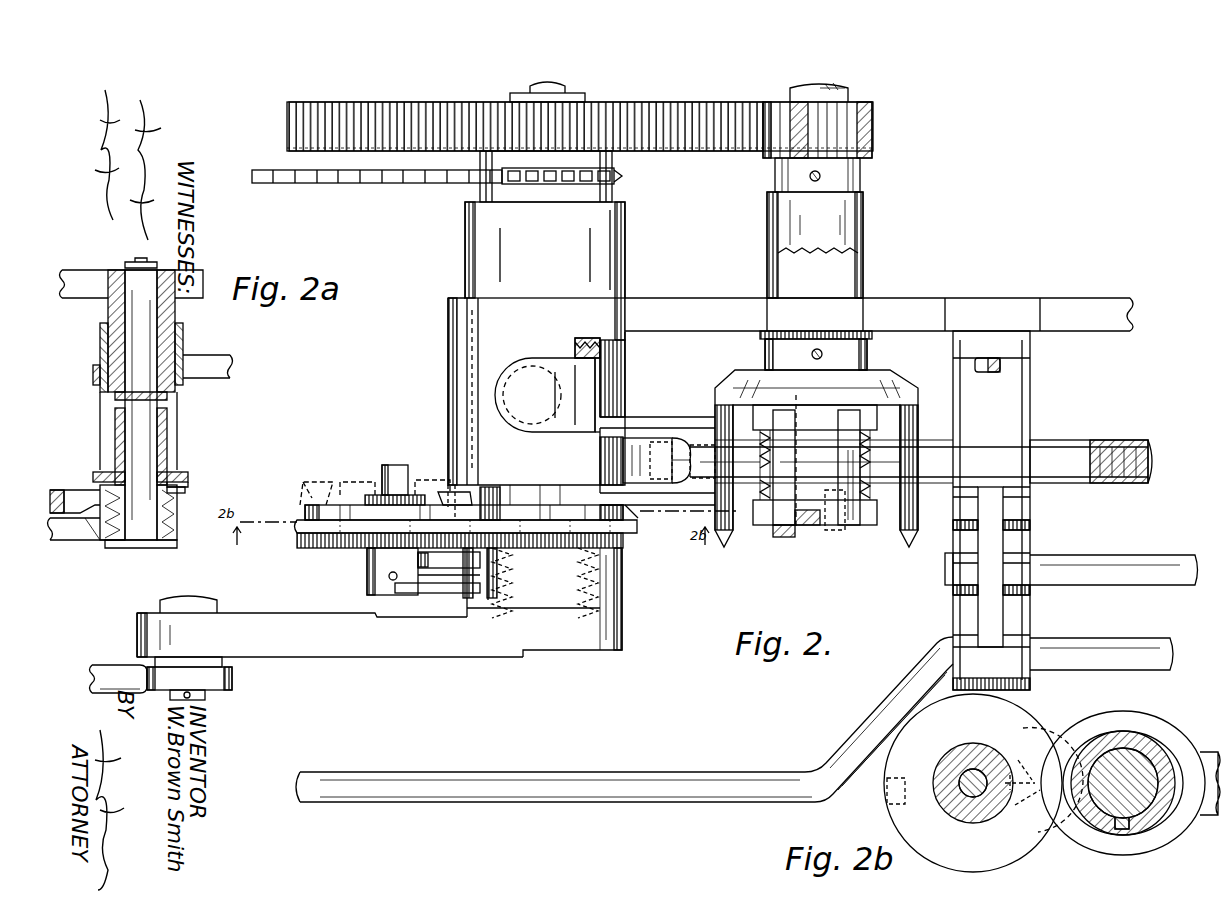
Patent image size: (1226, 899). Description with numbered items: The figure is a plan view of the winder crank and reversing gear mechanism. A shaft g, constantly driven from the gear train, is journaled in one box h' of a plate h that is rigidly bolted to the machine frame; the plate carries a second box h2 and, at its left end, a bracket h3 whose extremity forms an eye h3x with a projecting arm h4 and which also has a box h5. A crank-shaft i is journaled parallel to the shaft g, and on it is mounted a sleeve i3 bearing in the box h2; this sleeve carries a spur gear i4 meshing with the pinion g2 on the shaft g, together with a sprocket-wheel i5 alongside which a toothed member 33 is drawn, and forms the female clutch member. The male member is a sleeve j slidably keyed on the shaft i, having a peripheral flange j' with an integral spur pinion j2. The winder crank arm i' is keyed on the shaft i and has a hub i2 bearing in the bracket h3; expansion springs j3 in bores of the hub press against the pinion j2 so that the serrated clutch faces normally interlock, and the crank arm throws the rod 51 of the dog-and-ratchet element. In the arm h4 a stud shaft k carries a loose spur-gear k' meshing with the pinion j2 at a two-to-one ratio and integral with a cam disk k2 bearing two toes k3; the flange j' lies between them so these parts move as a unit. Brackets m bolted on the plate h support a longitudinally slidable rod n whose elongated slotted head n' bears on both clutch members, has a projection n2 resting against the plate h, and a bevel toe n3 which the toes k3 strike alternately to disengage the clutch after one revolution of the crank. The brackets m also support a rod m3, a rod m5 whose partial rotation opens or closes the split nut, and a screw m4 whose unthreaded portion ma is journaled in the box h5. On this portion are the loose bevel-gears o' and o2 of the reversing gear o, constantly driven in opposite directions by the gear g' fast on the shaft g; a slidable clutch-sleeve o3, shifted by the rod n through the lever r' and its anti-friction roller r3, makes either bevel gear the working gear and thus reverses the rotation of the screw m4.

In FIG. 2, the spur gear i4 is at (300, 117).
In FIG. 2A, the spur gear i4 is at (80, 293).
In FIG. 2, the rack 33 is at (328, 184).
In FIG. 2, the sprocket-wheel i5 is at (480, 178).
In FIG. 2A, the sprocket-wheel i5 is at (176, 306).
In FIG. 2, the sleeve i3 is at (614, 190).
In FIG. 2A, the sleeve i3 is at (115, 346).
In FIG. 2, the box h2 is at (618, 246).
In FIG. 2A, the box h2 is at (184, 338).
In FIG. 2, the projection n2 is at (525, 334).
In FIG. 2, the shaft g is at (854, 98).
In FIG. 2, the pinion g2 is at (874, 143).
In FIG. 2, the box h' is at (833, 244).
In FIG. 2, the plate h is at (879, 301).
In FIG. 2A, the plate h is at (161, 373).
In FIG. 2, the sleeve (male clutch member) j is at (538, 445).
In FIG. 2A, the sleeve (male clutch member) j is at (150, 445).
In FIG. 2B, the sleeve (male clutch member) j is at (1123, 761).
In FIG. 2, the crank-shaft i is at (614, 354).
In FIG. 2A, the crank-shaft i is at (137, 429).
In FIG. 2B, the crank-shaft i is at (1111, 753).
In FIG. 2, the bracket h3 is at (608, 378).
In FIG. 2A, the bracket h3 is at (104, 424).
In FIG. 2, the slotted head n' is at (584, 431).
In FIG. 2B, the slotted head n' is at (1130, 774).
In FIG. 2, the box h5 is at (658, 432).
In FIG. 2, the bevel toe n3 is at (476, 487).
In FIG. 2B, the bevel toe n3 is at (1030, 758).
In FIG. 2, the peripheral flange j' is at (521, 491).
In FIG. 2A, the peripheral flange j' is at (188, 461).
In FIG. 2, the spur pinion j2 is at (556, 536).
In FIG. 2A, the spur pinion j2 is at (186, 490).
In FIG. 2, the toes k3 is at (304, 485).
In FIG. 2B, the toes k3 is at (897, 778).
In FIG. 2, the stud shaft k is at (379, 471).
In FIG. 2B, the stud shaft k is at (958, 807).
In FIG. 2, the cam disk k2 is at (305, 512).
In FIG. 2B, the cam disk k2 is at (973, 783).
In FIG. 2, the spur-gear k' is at (433, 550).
In FIG. 2, the projecting arm h4 is at (368, 579).
In FIG. 2A, the projecting arm h4 is at (80, 512).
In FIG. 2, the expansion springs j3 is at (590, 600).
In FIG. 2A, the expansion springs j3 is at (108, 549).
In FIG. 2, the eye h3x is at (622, 587).
In FIG. 2, the hub i2 is at (598, 595).
In FIG. 2A, the hub i2 is at (178, 510).
In FIG. 2, the winder crank arm i' is at (330, 648).
In FIG. 2A, the winder crank arm i' is at (126, 547).
In FIG. 2, the rod 51 is at (101, 678).
In FIG. 2, the gear g' is at (818, 439).
In FIG. 2, the reversing gear o is at (815, 492).
In FIG. 2, the bevel-gear o' is at (754, 502).
In FIG. 2, the bevel-gear o2 is at (910, 547).
In FIG. 2, the slidable clutch-sleeve o3 is at (828, 512).
In FIG. 2, the anti-friction roller r3 is at (798, 526).
In FIG. 2, the lever r' is at (799, 495).
In FIG. 2, the unthreaded portion ma is at (866, 522).
In FIG. 2, the rod n is at (919, 445).
In FIG. 2, the brackets m is at (1020, 398).
In FIG. 2, the screw m4 is at (1108, 485).
In FIG. 2, the rod m3 is at (1112, 583).
In FIG. 2, the rod m5 is at (1064, 652).